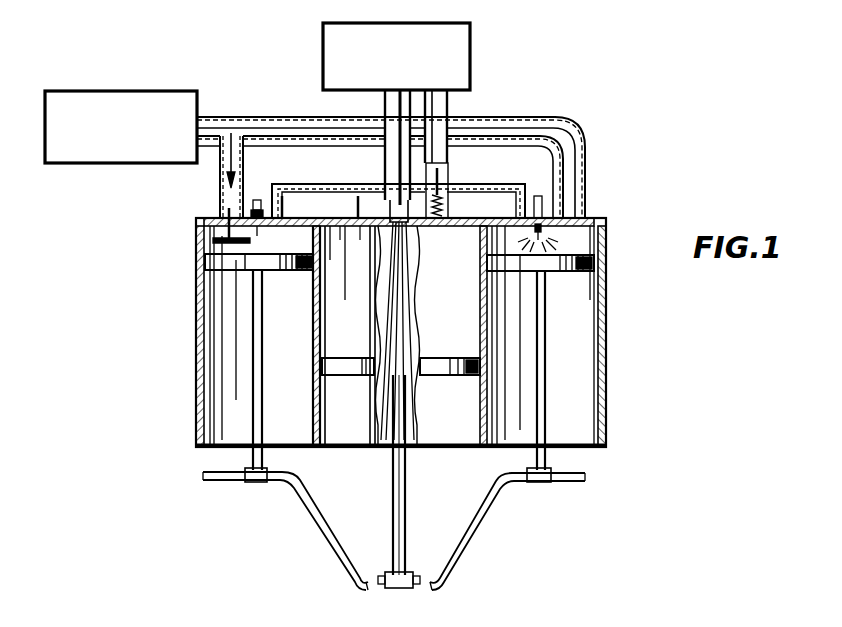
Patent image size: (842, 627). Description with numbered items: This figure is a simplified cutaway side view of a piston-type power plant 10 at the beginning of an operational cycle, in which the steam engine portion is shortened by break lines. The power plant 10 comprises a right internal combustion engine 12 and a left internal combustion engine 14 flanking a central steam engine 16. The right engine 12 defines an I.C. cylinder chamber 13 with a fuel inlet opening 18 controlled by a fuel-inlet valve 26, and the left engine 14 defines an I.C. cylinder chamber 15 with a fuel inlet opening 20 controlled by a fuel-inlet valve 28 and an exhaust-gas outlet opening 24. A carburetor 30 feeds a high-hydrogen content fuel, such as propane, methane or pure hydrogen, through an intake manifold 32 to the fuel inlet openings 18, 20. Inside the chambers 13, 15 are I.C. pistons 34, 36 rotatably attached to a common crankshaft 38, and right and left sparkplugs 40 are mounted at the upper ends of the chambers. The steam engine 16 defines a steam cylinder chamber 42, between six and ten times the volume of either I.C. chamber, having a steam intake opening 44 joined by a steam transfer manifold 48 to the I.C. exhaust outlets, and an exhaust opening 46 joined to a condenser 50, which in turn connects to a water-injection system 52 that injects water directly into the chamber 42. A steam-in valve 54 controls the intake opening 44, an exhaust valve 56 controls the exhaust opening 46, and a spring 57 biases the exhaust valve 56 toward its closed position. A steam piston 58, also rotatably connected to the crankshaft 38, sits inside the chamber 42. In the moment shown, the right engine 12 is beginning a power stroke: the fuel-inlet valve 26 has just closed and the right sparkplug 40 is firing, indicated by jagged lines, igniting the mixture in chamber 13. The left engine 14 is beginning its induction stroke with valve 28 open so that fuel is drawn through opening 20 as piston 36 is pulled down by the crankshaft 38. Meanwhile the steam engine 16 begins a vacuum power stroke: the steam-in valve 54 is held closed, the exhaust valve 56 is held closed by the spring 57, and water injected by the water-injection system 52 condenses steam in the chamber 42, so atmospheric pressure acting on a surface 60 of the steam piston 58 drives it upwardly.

The power plant 10 is at (178, 364).
The right internal combustion engine 12 is at (578, 364).
The I.C. cylinder chamber 13 is at (478, 240).
The left internal combustion engine 14 is at (290, 364).
The I.C. cylinder chamber 15 is at (312, 238).
The steam engine 16 is at (448, 342).
The fuel inlet opening 18 is at (572, 216).
The fuel inlet opening 20 is at (220, 210).
The exhaust-gas outlet opening 24 is at (300, 196).
The fuel-inlet valve 26 is at (582, 232).
The fuel-inlet valve 28 is at (218, 244).
The carburetor 30 is at (173, 90).
The intake manifold 32 is at (283, 122).
The I.C. piston 34 is at (566, 272).
The I.C. piston 36 is at (286, 272).
The crankshaft 38 is at (338, 540).
The sparkplug 40 is at (262, 188).
The steam cylinder chamber 42 is at (323, 305).
The steam intake opening 44 is at (350, 228).
The exhaust opening 46 is at (440, 228).
The steam transfer manifold 48 is at (336, 186).
The condenser 50 is at (323, 42).
The water-injection system 52 is at (410, 235).
The steam-in valve 54 is at (364, 200).
The exhaust valve 56 is at (445, 203).
The spring 57 is at (440, 182).
The steam piston 58 is at (448, 376).
The surface of steam piston 60 is at (355, 376).